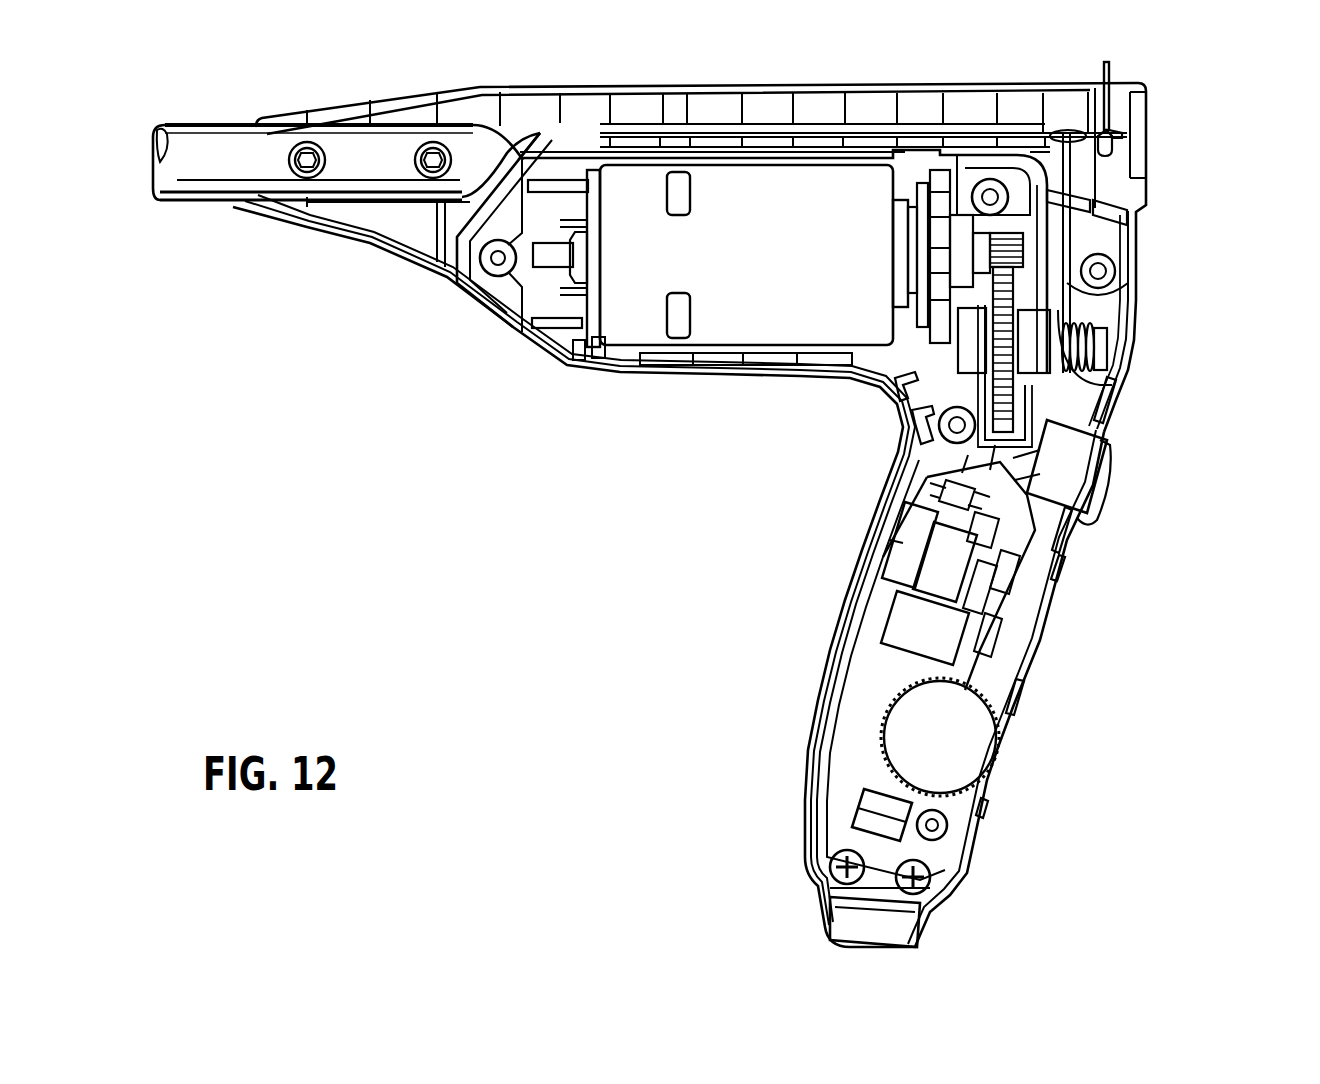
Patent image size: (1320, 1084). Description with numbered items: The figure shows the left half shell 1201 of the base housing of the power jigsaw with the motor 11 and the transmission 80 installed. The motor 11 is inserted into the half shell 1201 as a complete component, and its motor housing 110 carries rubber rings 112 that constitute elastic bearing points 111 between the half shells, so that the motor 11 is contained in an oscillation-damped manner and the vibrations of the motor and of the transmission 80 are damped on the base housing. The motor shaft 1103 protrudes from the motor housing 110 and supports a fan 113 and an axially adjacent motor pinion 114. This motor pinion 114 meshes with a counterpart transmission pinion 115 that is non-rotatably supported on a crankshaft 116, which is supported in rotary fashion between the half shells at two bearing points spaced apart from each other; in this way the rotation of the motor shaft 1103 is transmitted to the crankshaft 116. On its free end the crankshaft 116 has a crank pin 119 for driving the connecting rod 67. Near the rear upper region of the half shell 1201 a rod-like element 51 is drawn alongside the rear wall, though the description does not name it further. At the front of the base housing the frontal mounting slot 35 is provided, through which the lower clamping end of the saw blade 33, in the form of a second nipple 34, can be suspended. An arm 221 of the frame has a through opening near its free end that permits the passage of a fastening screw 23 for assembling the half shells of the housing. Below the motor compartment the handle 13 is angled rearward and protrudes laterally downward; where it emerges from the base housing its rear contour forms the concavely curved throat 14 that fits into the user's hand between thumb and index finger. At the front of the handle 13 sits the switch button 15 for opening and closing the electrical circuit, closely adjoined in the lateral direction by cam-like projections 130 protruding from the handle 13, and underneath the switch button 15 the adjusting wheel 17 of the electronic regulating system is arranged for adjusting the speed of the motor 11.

The motor 11 is at (628, 322).
The motor housing 110 is at (655, 333).
The bearing points 111 is at (893, 231).
The rubber rings 112 is at (590, 303).
The fan 113 is at (930, 323).
The motor shaft 1103 is at (992, 228).
The motor pinion 114 is at (1010, 250).
The transmission pinion 115 is at (1110, 333).
The crankshaft 116 is at (1118, 340).
The crank pin 119 is at (1120, 388).
The half shell 1201 is at (1133, 370).
The handle 13 is at (1045, 641).
The cam-like projections 130 is at (1100, 505).
The throat 14 is at (943, 377).
The switch button 15 is at (1108, 452).
The adjusting wheel 17 is at (972, 758).
The arm 221 is at (216, 185).
The fastening screws 23 is at (430, 176).
The saw blade 33 is at (1112, 67).
The second nipple 34 is at (1118, 152).
The mounting slot 35 is at (1140, 178).
The rod 51 is at (1018, 128).
The connecting rod 67 is at (1068, 284).
The transmission 80 is at (898, 420).